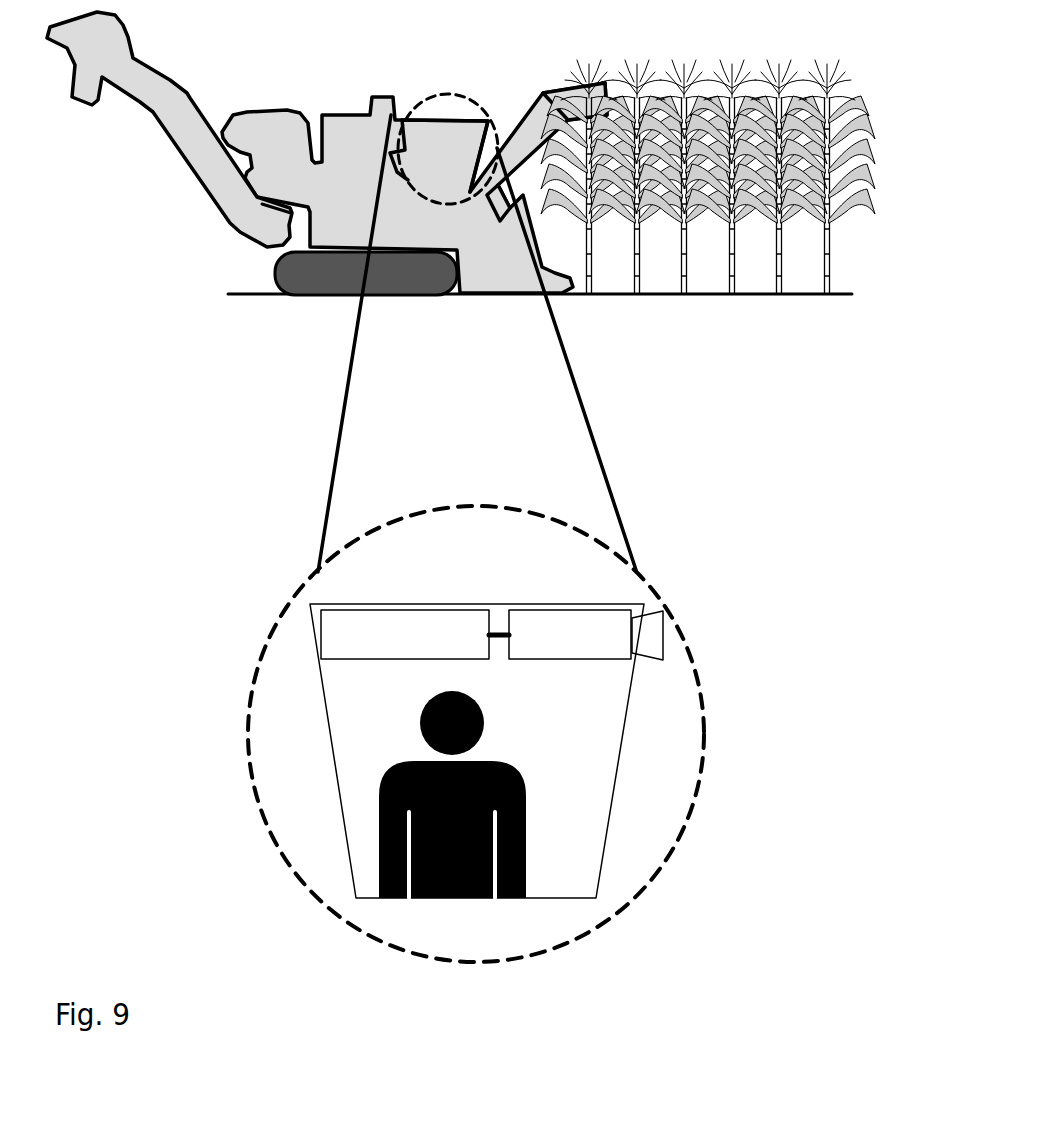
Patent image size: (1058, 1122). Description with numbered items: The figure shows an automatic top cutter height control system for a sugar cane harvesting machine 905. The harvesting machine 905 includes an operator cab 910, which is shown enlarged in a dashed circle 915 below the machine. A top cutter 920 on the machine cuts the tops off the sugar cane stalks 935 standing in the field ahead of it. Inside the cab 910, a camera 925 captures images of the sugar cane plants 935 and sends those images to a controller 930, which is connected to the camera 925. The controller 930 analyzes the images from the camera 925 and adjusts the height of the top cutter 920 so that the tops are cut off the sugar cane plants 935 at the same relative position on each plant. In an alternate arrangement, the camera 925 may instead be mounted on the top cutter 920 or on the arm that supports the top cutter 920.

The sugar cane harvesting machine 905 is at (328, 105).
The operator cab 910 is at (460, 128).
The dashed circle 915 is at (698, 673).
The top cutter 920 is at (567, 96).
The camera 925 is at (547, 614).
The controller 930 is at (440, 614).
The sugar cane stalks 935 is at (695, 65).